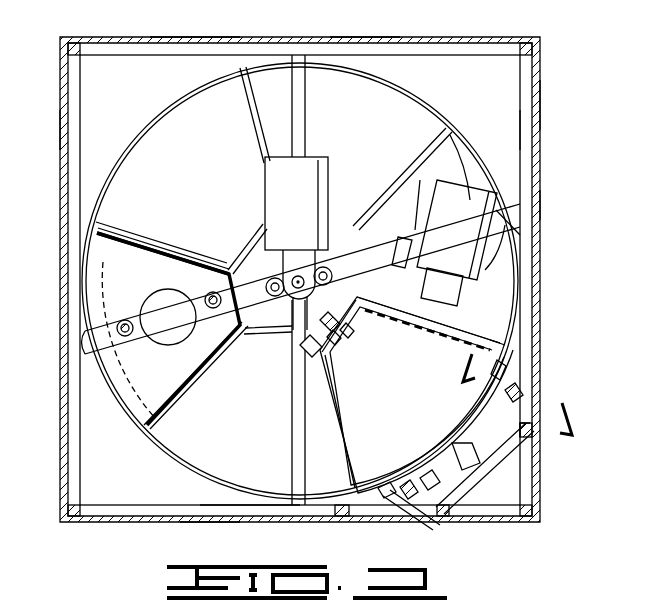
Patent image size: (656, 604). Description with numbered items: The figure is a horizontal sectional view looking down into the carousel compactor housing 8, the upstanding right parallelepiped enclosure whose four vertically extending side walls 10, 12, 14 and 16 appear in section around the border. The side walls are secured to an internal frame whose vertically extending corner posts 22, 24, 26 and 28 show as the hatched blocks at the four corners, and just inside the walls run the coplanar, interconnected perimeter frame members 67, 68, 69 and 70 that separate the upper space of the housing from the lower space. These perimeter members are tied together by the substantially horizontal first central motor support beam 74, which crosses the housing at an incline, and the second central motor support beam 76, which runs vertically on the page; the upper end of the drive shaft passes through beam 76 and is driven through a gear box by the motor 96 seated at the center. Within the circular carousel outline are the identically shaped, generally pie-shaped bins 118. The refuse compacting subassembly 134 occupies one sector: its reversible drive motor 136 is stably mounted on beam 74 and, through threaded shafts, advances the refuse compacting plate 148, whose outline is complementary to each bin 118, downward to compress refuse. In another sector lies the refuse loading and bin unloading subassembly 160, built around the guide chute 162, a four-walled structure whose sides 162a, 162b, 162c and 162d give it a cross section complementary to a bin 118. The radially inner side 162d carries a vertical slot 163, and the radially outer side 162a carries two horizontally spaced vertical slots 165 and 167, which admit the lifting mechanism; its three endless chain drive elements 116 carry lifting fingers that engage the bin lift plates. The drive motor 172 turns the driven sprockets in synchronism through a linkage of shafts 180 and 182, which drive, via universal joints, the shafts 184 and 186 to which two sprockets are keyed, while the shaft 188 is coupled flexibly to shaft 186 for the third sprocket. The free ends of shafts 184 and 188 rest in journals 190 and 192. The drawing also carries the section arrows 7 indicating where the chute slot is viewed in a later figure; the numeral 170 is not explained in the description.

The housing 8 is at (404, 34).
The side wall 10 is at (62, 222).
The side wall 12 is at (340, 36).
The side wall 14 is at (541, 100).
The side wall 16 is at (204, 523).
The corner post 22 is at (76, 40).
The corner post 24 is at (530, 40).
The corner post 26 is at (540, 520).
The corner post 28 is at (74, 522).
The perimeter frame member 67 is at (234, 510).
The perimeter frame member 68 is at (70, 127).
The perimeter frame member 69 is at (170, 43).
The perimeter frame member 70 is at (522, 133).
The first central motor support beam 74 is at (247, 290).
The second central motor support beam 76 is at (302, 108).
The motor 96 is at (296, 203).
The endless chain drive element 116 is at (520, 385).
The bin 118 is at (166, 460).
The refuse compacting subassembly 134 is at (150, 290).
The drive motor 136 is at (160, 328).
The refuse compacting plate 148 is at (150, 400).
The refuse loading and bin unloading subassembly 160 is at (462, 165).
The guide chute 162 is at (335, 458).
The side of guide chute 162a is at (362, 470).
The side of guide chute 162b is at (320, 396).
The side of guide chute 162c is at (498, 332).
The side of guide chute 162d is at (356, 306).
The vertical slot 163 is at (334, 342).
The vertically extending slot 165 is at (498, 368).
The vertically extending slot 167 is at (385, 490).
The pin 170 is at (350, 337).
The drive motor 172 is at (457, 243).
The shaft 180 is at (415, 263).
The shaft 182 is at (522, 282).
The shaft 184 is at (305, 318).
The shaft 186 is at (535, 430).
The shaft 188 is at (427, 476).
The journal 190 is at (298, 350).
The journal 192 is at (360, 514).
The section line 7 is at (517, 385).